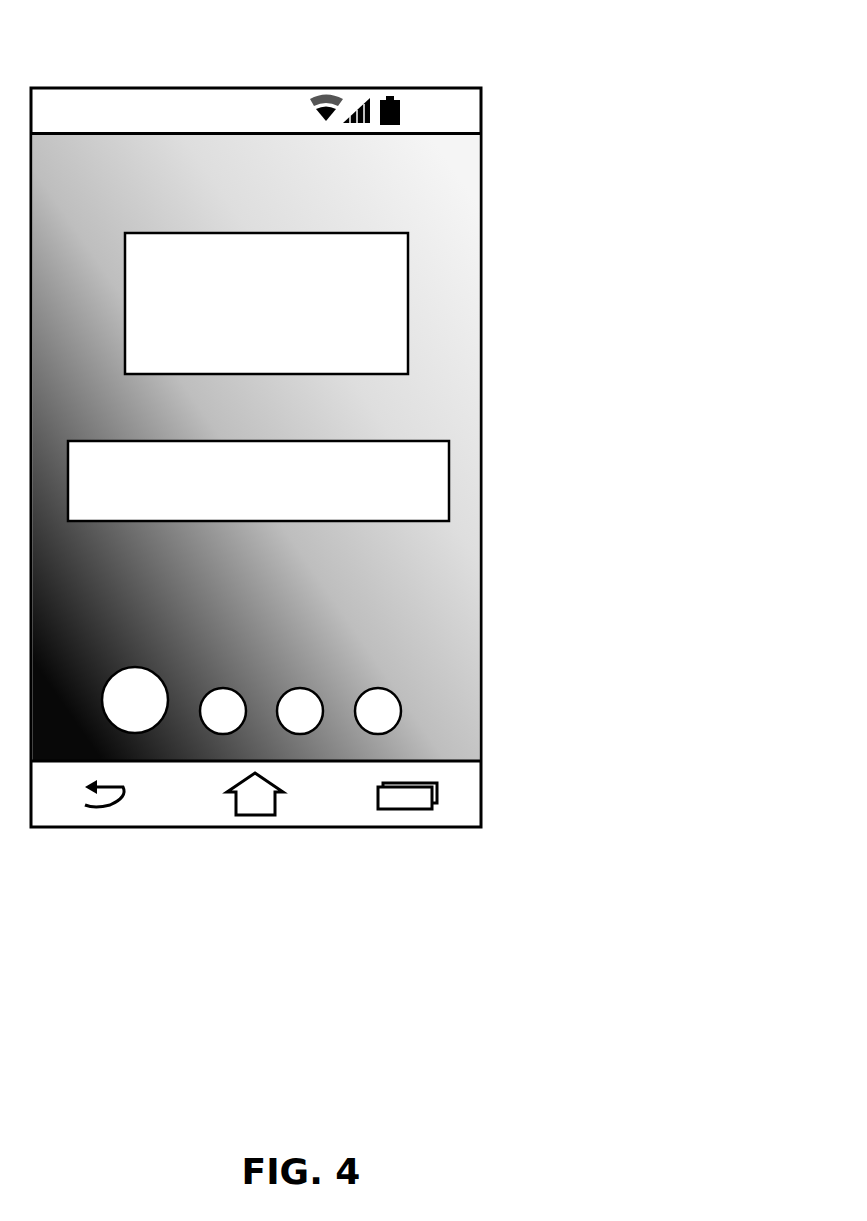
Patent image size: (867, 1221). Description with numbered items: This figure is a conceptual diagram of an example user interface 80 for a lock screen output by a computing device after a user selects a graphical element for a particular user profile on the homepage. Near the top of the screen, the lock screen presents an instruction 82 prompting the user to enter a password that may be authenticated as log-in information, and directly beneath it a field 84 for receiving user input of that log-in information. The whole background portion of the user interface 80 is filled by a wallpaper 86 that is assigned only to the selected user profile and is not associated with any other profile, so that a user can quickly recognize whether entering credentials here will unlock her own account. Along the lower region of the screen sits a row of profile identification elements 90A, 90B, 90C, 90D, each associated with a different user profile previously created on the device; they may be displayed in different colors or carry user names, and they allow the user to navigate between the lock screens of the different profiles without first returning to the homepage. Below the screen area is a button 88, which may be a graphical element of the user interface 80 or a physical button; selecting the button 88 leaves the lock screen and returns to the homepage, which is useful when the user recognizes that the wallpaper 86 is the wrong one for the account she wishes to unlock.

The user interface 80 is at (447, 86).
The instruction 82 is at (408, 299).
The field 84 is at (450, 477).
The wallpaper 86 is at (468, 616).
The button 88 is at (98, 817).
The profile identification element 90A is at (140, 668).
The profile identification element 90B is at (223, 688).
The profile identification element 90C is at (300, 688).
The profile identification element 90D is at (388, 694).